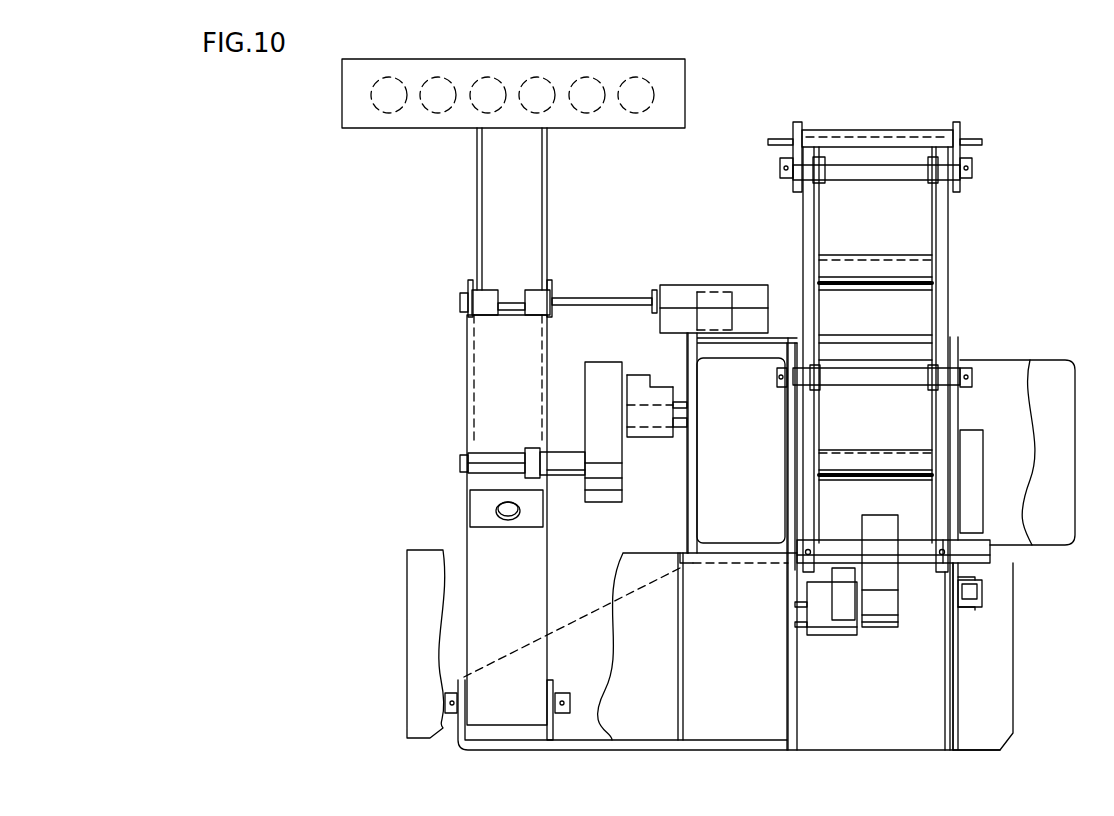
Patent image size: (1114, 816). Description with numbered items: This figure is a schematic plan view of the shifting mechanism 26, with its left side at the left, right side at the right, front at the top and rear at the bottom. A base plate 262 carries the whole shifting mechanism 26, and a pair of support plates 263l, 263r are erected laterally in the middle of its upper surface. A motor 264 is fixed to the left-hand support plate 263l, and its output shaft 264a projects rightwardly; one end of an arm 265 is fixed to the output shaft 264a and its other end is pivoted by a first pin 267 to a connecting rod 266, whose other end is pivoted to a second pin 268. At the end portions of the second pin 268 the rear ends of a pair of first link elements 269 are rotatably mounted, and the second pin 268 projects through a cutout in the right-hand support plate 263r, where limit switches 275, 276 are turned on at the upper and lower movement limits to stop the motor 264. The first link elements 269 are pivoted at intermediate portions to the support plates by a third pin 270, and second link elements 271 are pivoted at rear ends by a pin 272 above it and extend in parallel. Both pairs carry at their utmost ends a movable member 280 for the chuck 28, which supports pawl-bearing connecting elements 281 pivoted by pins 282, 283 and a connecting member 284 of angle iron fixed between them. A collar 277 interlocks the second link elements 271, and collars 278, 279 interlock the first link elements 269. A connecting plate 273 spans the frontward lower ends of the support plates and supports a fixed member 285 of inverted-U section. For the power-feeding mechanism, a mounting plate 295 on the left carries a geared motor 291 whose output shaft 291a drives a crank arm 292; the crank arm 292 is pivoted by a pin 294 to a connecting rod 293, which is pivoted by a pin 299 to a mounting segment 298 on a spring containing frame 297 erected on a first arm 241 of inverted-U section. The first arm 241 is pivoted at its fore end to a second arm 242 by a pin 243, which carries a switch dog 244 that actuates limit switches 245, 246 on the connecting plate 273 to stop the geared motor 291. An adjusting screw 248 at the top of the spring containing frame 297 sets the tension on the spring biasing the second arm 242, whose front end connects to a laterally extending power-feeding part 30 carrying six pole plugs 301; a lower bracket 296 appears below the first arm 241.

The power-feeding part 30 is at (625, 51).
The pole plugs 301 is at (393, 80).
The second arm 242 is at (550, 195).
The pin 243 is at (509, 290).
The switch dog 244 is at (598, 300).
The limit switch 246 is at (678, 287).
The limit switch 245 is at (678, 334).
The mounting plate 295 is at (692, 523).
The pin 294 is at (631, 372).
The crank arm 292 is at (637, 438).
The geared motor 291 is at (720, 494).
The output shaft 291a is at (679, 425).
The connecting rod 293 is at (599, 494).
The pin 299 is at (563, 475).
The mounting segment 298 is at (460, 456).
The spring containing frame 297 is at (481, 500).
The adjusting screw 248 is at (508, 518).
The first arm 241 is at (533, 618).
The bottom bracket 296 is at (566, 746).
The motor 264 is at (762, 746).
The left-hand support plate 263l is at (795, 705).
The right-hand support plate 263r is at (958, 720).
The base plate 262 is at (1005, 626).
The limit switch 276 is at (965, 603).
The limit switch 275 is at (972, 521).
The shifting mechanism 26 is at (996, 337).
The chuck 28 is at (997, 158).
The movable member 280 is at (909, 412).
The connecting elements 281 is at (797, 122).
The connecting member 284 is at (868, 131).
The pin 282 is at (870, 176).
The pin 283 is at (875, 236).
The fixed member 285 is at (935, 221).
The second link elements 271 is at (803, 302).
The collar 277 is at (867, 273).
The collar 278 is at (875, 326).
The connecting plate 273 is at (905, 342).
The pin 272 is at (870, 379).
The third pin 270 is at (875, 439).
The collar 279 is at (875, 460).
The first link elements 269 is at (940, 510).
The second pin 268 is at (910, 557).
The connecting rod 266 is at (890, 606).
The first pin 267 is at (860, 602).
The arm 265 is at (833, 632).
The output shaft 264a is at (800, 628).